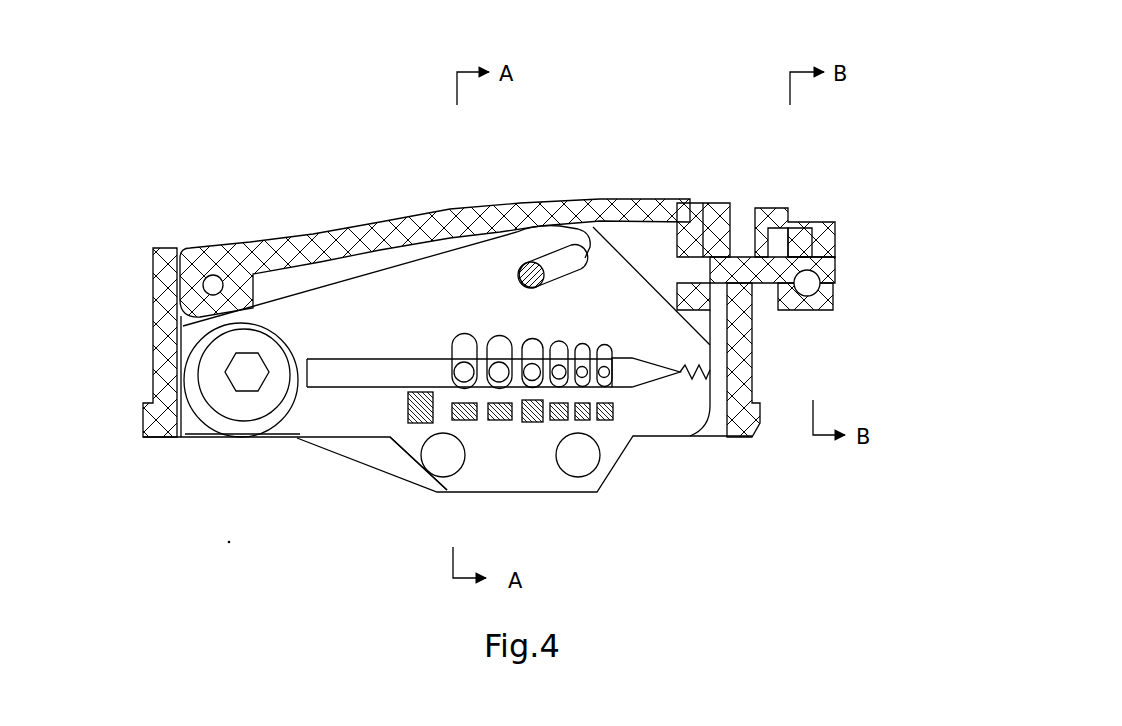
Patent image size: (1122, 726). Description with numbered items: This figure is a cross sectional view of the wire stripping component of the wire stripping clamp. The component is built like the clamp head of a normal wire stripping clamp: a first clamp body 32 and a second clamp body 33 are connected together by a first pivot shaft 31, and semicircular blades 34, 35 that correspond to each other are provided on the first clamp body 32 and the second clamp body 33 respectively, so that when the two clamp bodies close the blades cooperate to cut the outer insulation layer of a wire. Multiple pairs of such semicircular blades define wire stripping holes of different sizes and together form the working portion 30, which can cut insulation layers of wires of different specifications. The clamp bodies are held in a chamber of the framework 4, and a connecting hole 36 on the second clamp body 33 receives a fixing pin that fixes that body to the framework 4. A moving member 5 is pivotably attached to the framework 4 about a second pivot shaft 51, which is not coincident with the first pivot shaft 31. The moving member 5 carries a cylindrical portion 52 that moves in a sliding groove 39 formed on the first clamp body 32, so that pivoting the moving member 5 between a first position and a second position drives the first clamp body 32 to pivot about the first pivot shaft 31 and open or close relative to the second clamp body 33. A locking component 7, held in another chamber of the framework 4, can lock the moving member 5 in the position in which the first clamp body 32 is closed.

The framework 4 is at (153, 290).
The moving member 5 is at (505, 209).
The locking component 7 is at (794, 203).
The working portion 30 is at (460, 325).
The first pivot shaft 31 is at (252, 374).
The first clamp body 32 is at (610, 280).
The second clamp body 33 is at (633, 400).
The semicircular blade 34 is at (517, 273).
The semicircular blade 35 is at (497, 310).
The connecting hole 36 is at (442, 458).
The sliding groove 39 is at (575, 257).
The second pivot shaft 51 is at (216, 293).
The cylindrical portion 52 is at (497, 310).